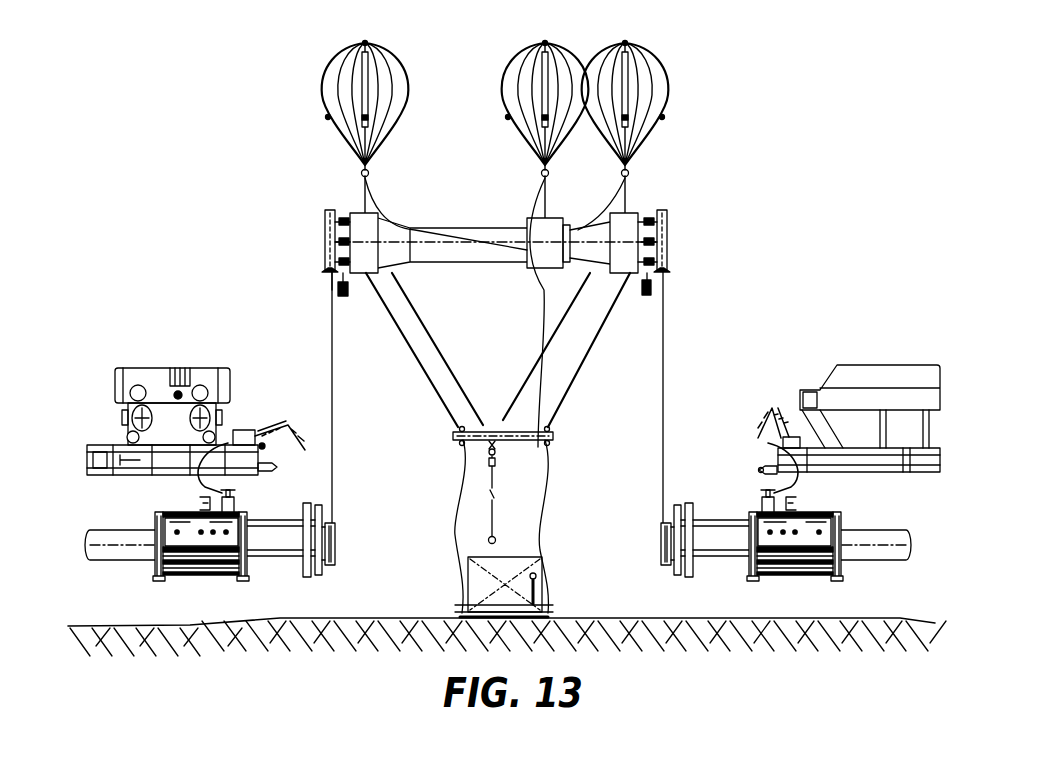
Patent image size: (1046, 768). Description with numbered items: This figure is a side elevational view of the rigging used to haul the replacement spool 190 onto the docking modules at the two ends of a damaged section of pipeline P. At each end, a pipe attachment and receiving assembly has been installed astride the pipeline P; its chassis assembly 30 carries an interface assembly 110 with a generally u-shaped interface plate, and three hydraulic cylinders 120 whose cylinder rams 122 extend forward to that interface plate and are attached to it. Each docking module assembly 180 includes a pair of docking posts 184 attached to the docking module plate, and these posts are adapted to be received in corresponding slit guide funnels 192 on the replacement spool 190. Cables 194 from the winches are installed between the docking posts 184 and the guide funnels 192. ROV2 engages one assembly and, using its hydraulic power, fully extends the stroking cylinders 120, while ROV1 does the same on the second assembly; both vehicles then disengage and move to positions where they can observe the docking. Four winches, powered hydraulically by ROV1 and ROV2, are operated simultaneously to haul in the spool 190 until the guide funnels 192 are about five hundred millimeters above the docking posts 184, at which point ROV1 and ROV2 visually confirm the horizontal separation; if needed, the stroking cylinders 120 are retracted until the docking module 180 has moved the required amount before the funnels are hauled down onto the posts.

The replacement spool 190 is at (470, 228).
The slit guide funnels 192 is at (325, 240).
The cables 194 is at (332, 355).
The docking module assembly 180 is at (318, 500).
The docking posts 184 is at (336, 540).
The interface assembly 110 is at (301, 576).
The hydraulic cylinders 120 is at (188, 512).
The cylinder rams 122 is at (265, 540).
The chassis assembly 30 is at (197, 576).
The pipeline P is at (120, 563).
The remotely operated vehicle ROV1 is at (878, 368).
The remotely operated vehicle ROV2 is at (160, 368).